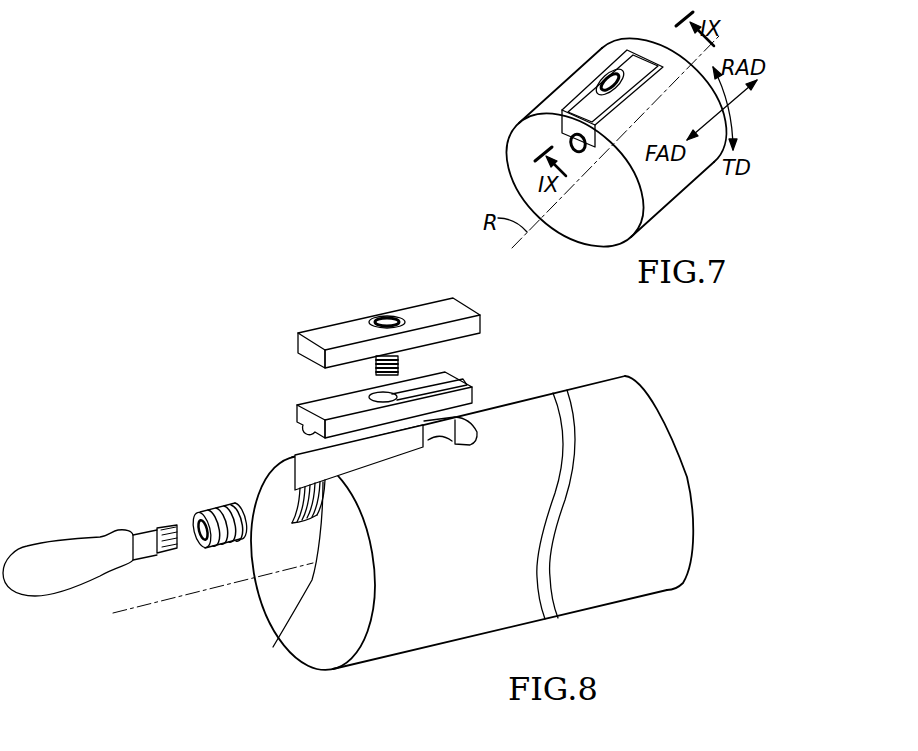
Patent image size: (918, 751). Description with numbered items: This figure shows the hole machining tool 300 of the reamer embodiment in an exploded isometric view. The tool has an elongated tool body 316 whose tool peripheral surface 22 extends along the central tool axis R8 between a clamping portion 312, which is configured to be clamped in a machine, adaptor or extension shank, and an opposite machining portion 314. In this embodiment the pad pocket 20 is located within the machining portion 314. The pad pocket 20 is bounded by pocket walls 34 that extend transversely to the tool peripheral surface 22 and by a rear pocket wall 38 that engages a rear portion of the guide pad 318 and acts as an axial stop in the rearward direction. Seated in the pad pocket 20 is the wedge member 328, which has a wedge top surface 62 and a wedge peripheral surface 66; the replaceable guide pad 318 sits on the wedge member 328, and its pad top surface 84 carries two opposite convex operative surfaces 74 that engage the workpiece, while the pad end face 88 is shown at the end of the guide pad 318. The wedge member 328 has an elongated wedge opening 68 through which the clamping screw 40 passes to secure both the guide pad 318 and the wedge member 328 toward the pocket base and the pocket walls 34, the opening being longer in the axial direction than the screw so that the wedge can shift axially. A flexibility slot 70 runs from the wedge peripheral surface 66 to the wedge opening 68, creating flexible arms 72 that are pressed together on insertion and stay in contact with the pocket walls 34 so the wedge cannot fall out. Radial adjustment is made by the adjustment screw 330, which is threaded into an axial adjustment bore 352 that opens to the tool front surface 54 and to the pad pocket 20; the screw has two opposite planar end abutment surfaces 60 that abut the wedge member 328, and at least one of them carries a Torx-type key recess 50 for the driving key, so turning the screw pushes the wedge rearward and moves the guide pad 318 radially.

The hole machining tool 300 is at (285, 208).
The guide pad 318 is at (370, 303).
The pad top surface 84 is at (343, 332).
The end face of first clamp plate 88 is at (312, 347).
The convex operative surfaces 74 is at (360, 333).
The clamping screw 40 is at (367, 315).
The wedge member 328 is at (369, 382).
The wedge top surface 62 is at (333, 405).
The wedge peripheral surface 66 is at (297, 418).
The wedge opening 68 is at (385, 397).
The flexibility slot 70 is at (424, 364).
The flexible arms 72 is at (455, 376).
The pad pocket 20 is at (358, 450).
The pocket walls 34 is at (300, 471).
The rear pocket wall 38 is at (462, 422).
The tool body 316 is at (522, 386).
The clamping portion 312 is at (469, 537).
The tool peripheral surface 22 is at (450, 622).
The adjustment bore 352 is at (274, 648).
The tool front surface 54 is at (328, 638).
The machining portion 314 is at (170, 447).
The adjustment screw 330 is at (181, 504).
The key recess 50 is at (196, 527).
The end abutment surfaces 60 is at (200, 546).
The tool axis R8 is at (166, 603).